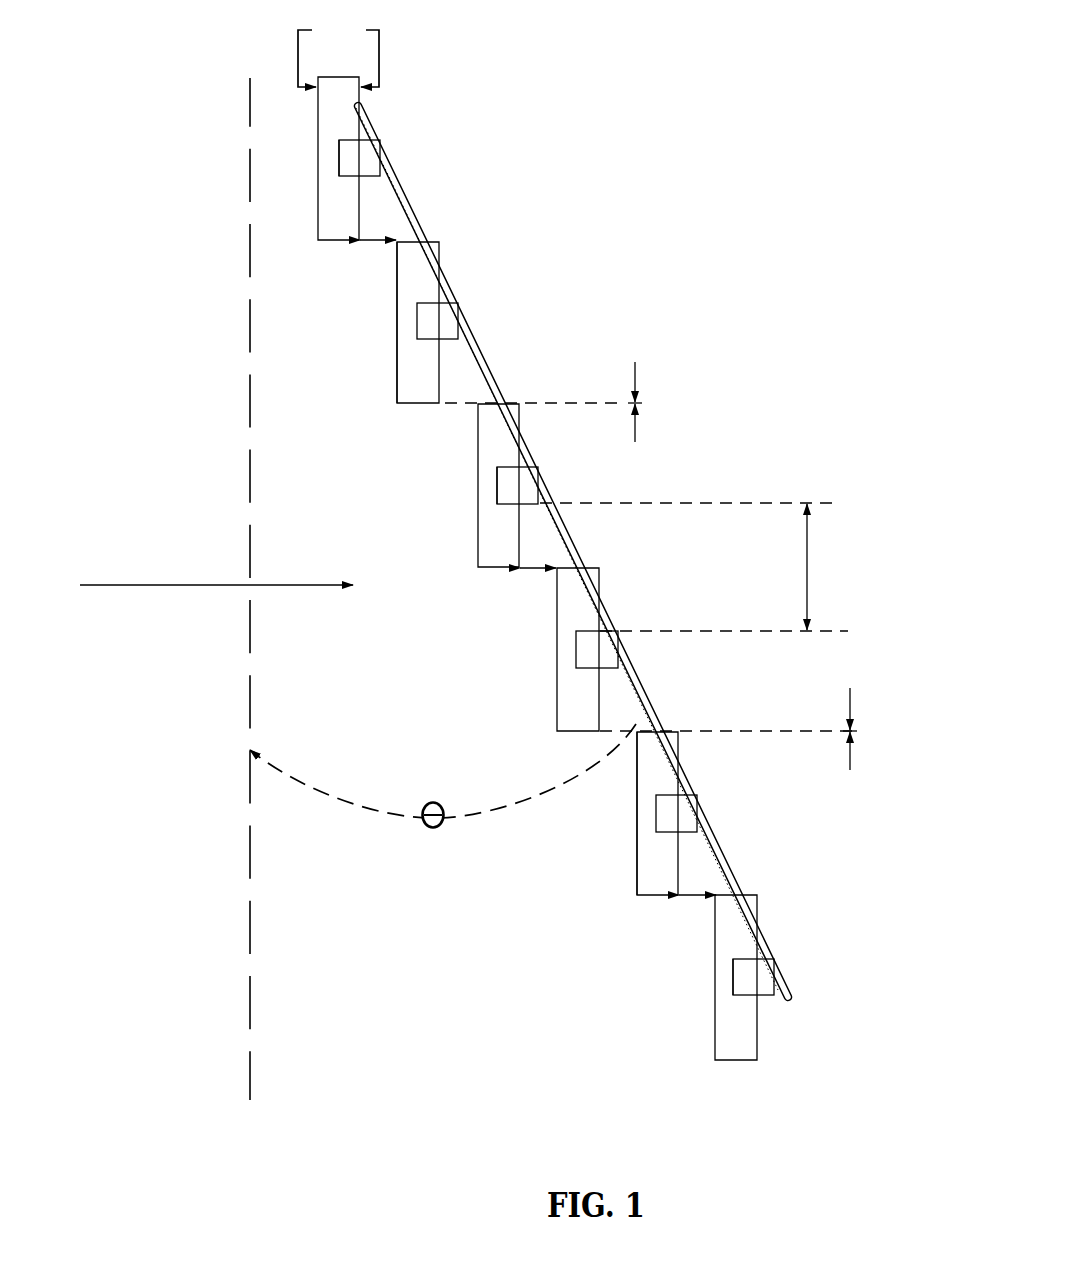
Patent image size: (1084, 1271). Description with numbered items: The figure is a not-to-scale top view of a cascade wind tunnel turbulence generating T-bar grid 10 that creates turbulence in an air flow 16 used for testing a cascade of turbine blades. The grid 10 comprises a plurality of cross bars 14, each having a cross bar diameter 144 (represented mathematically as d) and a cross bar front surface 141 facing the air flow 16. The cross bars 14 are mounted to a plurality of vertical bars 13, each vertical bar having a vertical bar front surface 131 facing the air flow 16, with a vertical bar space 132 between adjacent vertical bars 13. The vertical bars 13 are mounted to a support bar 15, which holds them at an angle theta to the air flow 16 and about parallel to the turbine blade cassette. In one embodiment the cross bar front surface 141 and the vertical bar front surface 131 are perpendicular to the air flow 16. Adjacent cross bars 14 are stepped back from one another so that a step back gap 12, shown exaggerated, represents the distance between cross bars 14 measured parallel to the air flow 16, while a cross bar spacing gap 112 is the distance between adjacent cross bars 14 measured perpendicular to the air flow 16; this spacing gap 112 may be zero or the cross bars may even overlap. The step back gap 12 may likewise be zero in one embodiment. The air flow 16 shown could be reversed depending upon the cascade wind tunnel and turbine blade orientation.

The T-bar grid 10 is at (728, 270).
The step back gap 12 is at (378, 240).
The vertical bar 13 is at (438, 323).
The vertical bar front surface 131 is at (338, 153).
The vertical bar space 132 is at (699, 567).
The cross bar 14 is at (408, 293).
The cross bar front surface 141 is at (397, 362).
The cross bar diameter 144 is at (338, 55).
The support bar 15 is at (369, 127).
The air flow 16 is at (216, 603).
The cross bar spacing gap 112 is at (636, 379).